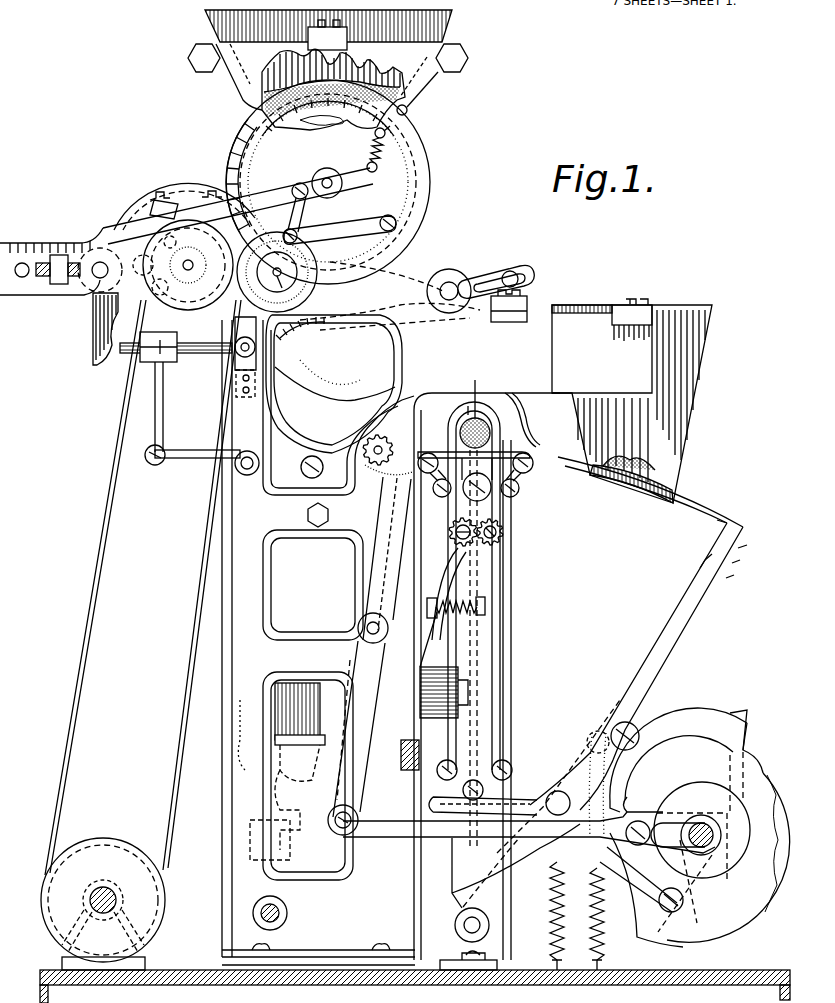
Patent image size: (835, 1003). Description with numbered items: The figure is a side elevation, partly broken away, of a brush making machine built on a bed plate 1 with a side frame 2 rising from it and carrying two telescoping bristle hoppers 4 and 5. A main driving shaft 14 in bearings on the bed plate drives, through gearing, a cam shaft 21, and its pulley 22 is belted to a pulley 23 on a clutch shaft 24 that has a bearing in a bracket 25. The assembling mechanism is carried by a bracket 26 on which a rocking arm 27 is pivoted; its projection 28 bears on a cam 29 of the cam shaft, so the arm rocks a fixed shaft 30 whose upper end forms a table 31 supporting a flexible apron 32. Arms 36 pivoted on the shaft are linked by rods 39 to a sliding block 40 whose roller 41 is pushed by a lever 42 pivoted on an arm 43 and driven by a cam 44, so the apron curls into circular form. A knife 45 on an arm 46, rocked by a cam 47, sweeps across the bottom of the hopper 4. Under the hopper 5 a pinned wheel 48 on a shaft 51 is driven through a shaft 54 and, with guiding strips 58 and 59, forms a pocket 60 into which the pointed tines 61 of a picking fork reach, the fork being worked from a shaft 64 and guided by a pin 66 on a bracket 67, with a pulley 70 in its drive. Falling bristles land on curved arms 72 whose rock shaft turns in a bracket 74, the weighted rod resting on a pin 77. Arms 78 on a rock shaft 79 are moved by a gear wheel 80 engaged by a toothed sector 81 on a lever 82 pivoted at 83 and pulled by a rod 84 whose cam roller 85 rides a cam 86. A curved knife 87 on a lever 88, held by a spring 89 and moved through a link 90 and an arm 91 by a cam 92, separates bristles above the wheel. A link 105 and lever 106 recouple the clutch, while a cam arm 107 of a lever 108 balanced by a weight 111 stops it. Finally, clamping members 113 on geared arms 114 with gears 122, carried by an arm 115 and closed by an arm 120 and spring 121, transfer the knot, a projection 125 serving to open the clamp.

The bed plate 1 is at (670, 980).
The side frame 2 is at (240, 535).
The bristle hopper 4 is at (690, 368).
The bristle hopper 5 is at (445, 32).
The main driving shaft 14 is at (110, 892).
The cam shaft 21 is at (716, 833).
The pulley 22 is at (165, 910).
The pulley 23 is at (184, 302).
The clutch shaft 24 is at (193, 265).
The bracket 25 is at (165, 202).
The bracket 26 is at (488, 942).
The rocking arm 27 is at (455, 865).
The projection 28 is at (568, 784).
The cam 29 is at (692, 724).
The shaft 30 is at (472, 694).
The table 31 is at (522, 474).
The flexible apron 32 is at (479, 422).
The arms 36 is at (528, 485).
The rods 39 is at (512, 648).
The block 40 is at (495, 800).
The roller 41 is at (474, 770).
The lever 42 is at (430, 799).
The arm 43 is at (560, 870).
The cam 44 is at (740, 913).
The knife 45 is at (700, 505).
The arm 46 is at (700, 612).
The cam 47 is at (738, 712).
The wheel 48 is at (268, 118).
The shaft 51 is at (328, 178).
The shaft 54 is at (268, 282).
The guiding strips 58 is at (300, 337).
The guiding strips 59 is at (430, 163).
The pocket 60 is at (400, 256).
The tines 61 is at (400, 272).
The shaft 64 is at (470, 278).
The pin 66 is at (525, 270).
The bracket 67 is at (530, 302).
The pulley 70 is at (150, 195).
The curved arms 72 is at (292, 388).
The bracket 74 is at (238, 375).
The pin 77 is at (248, 354).
The arms 78 is at (286, 448).
The rock shaft 79 is at (390, 438).
The gear wheel 80 is at (376, 488).
The toothed sector 81 is at (400, 478).
The lever 82 is at (365, 714).
The pivot 83 is at (358, 628).
The rod 84 is at (388, 837).
The cam roller 85 is at (640, 845).
The cam 86 is at (688, 790).
The curved knife 87 is at (235, 147).
The lever 88 is at (294, 200).
The spring 89 is at (385, 150).
The link 90 is at (339, 224).
The arm 91 is at (378, 195).
The cam 92 is at (176, 339).
The link 105 is at (163, 424).
The lever 106 is at (183, 460).
The cam arm 107 is at (98, 337).
The lever 108 is at (108, 232).
The balance weight 111 is at (56, 256).
The clamping members 113 is at (458, 433).
The arms 114 is at (494, 440).
The arm 115 is at (478, 585).
The arm 120 is at (444, 565).
The spring 121 is at (486, 610).
The gears 122 is at (505, 532).
The projection 125 is at (468, 406).